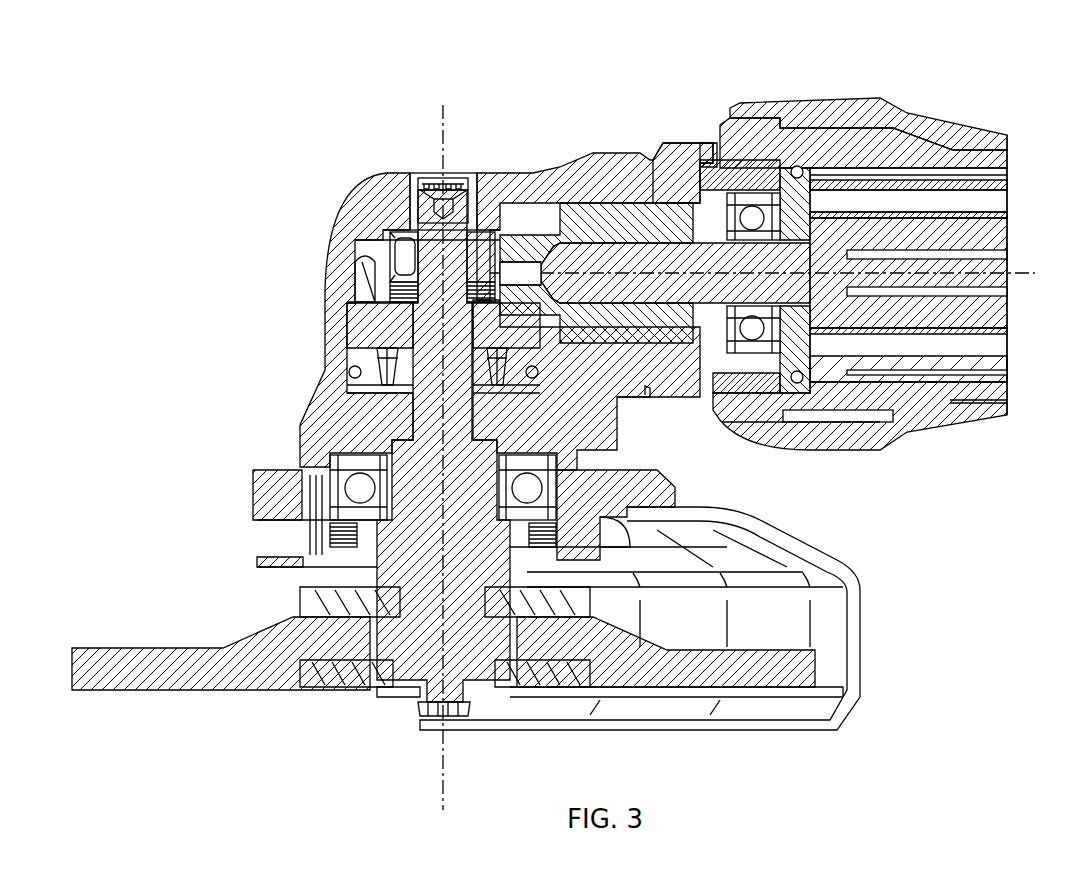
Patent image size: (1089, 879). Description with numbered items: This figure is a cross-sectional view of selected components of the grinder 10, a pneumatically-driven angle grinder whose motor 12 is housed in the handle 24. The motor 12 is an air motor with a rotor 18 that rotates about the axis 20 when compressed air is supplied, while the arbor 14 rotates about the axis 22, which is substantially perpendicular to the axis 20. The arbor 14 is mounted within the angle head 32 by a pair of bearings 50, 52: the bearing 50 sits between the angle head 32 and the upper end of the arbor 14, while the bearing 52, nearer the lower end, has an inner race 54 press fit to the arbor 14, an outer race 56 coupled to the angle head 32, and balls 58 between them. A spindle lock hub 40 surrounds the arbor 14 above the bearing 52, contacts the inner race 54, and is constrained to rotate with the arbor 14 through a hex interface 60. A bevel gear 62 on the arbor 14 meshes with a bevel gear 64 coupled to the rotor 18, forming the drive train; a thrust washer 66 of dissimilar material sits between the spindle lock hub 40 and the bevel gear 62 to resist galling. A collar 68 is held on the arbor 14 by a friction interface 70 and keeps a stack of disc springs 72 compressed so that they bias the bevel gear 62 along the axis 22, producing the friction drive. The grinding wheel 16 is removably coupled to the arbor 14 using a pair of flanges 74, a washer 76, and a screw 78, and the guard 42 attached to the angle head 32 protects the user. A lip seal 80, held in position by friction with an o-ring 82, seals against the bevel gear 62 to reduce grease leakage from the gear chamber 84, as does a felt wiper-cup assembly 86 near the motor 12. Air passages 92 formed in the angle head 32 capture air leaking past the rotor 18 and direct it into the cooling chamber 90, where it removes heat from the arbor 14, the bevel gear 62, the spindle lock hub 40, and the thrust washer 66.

The grinder 10 is at (270, 100).
The motor 12 is at (1010, 332).
The arbor 14 is at (462, 200).
The grinding wheel 16 is at (130, 680).
The rotor 18 is at (830, 130).
The axis 20 is at (1034, 276).
The axis 22 is at (443, 112).
The handle 24 is at (893, 444).
The angle head 32 is at (592, 162).
The spindle lock hub 40 is at (325, 410).
The guard 42 is at (860, 580).
The bearing 50 is at (418, 178).
The bearing 52 is at (560, 500).
The inner race 54 is at (262, 563).
The outer race 56 is at (325, 482).
The balls 58 is at (355, 495).
The hex interface 60 is at (392, 420).
The bevel gear 62 is at (388, 300).
The bevel gear 64 is at (547, 240).
The thrust washer 66 is at (349, 372).
The collar 68 is at (398, 250).
The friction interface 70 is at (387, 212).
The disc springs 72 is at (370, 290).
The flanges 74 is at (305, 598).
The washer 76 is at (380, 695).
The screw 78 is at (420, 712).
The lip seal 80 is at (365, 317).
The o-ring 82 is at (382, 367).
The gear chamber 84 is at (628, 215).
The felt wiper-cup assembly 86 is at (712, 185).
The cooling chamber 90 is at (545, 452).
The air passages 92 is at (640, 392).